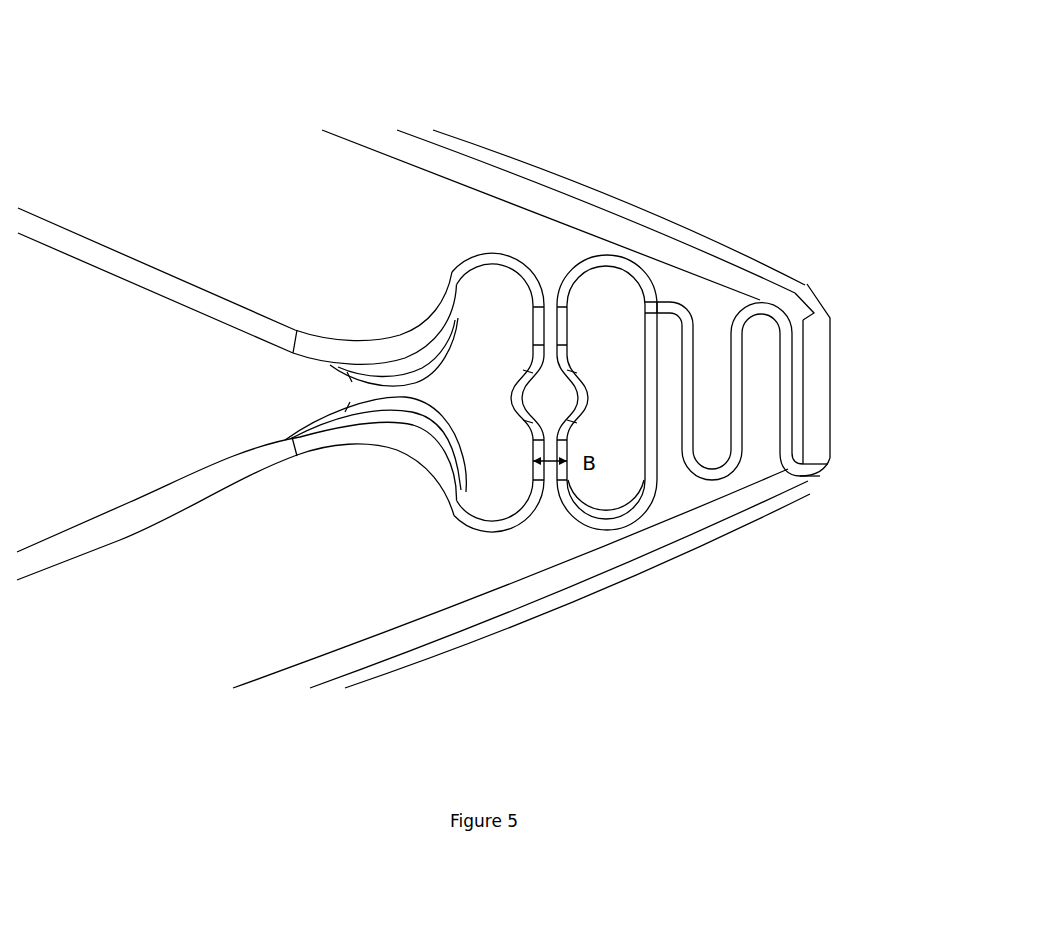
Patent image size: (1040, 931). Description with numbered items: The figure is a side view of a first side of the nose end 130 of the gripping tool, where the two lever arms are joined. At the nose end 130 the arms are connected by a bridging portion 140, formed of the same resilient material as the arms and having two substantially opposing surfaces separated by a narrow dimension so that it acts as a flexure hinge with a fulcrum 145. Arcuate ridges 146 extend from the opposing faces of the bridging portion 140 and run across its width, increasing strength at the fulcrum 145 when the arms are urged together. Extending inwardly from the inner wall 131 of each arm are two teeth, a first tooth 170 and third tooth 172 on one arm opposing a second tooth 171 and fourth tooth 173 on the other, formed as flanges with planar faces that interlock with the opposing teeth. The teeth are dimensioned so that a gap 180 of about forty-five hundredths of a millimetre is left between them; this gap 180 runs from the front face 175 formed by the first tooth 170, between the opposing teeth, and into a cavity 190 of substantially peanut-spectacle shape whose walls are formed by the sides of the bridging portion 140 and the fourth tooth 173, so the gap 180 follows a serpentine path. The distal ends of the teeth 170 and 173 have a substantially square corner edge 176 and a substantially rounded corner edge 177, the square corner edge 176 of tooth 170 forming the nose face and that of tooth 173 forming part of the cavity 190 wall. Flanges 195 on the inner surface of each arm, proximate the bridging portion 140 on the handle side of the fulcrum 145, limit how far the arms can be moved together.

The flanges 195 is at (408, 365).
The bridging portion 140 is at (548, 303).
The nose end 130 is at (553, 245).
The inner wall 131 is at (714, 484).
The square corner edge 176 is at (647, 313).
The rounded corner edge 177 is at (692, 318).
The third tooth 172 is at (712, 347).
The second tooth 171 is at (760, 349).
The first tooth 170 is at (818, 375).
The front face 175 is at (847, 409).
The gap 180 is at (823, 493).
The fourth tooth 173 is at (668, 395).
The cavity 190 is at (608, 480).
The fulcrum 145 is at (550, 387).
The arcuate ridges 146 is at (520, 393).